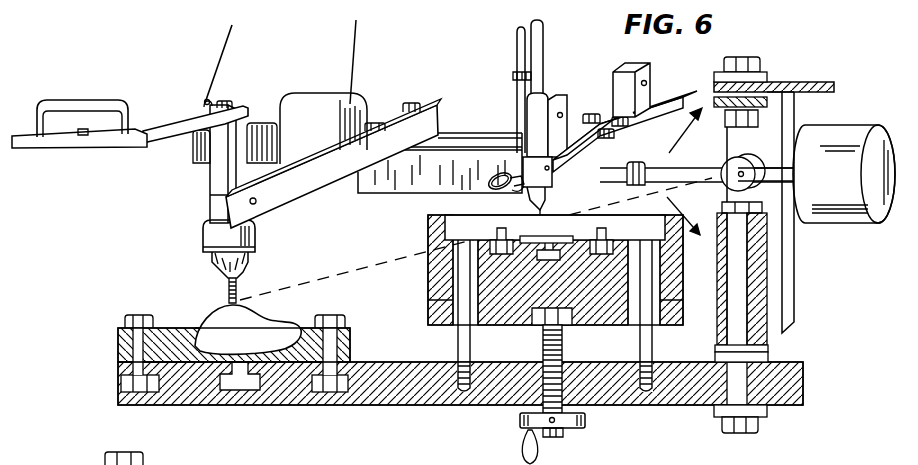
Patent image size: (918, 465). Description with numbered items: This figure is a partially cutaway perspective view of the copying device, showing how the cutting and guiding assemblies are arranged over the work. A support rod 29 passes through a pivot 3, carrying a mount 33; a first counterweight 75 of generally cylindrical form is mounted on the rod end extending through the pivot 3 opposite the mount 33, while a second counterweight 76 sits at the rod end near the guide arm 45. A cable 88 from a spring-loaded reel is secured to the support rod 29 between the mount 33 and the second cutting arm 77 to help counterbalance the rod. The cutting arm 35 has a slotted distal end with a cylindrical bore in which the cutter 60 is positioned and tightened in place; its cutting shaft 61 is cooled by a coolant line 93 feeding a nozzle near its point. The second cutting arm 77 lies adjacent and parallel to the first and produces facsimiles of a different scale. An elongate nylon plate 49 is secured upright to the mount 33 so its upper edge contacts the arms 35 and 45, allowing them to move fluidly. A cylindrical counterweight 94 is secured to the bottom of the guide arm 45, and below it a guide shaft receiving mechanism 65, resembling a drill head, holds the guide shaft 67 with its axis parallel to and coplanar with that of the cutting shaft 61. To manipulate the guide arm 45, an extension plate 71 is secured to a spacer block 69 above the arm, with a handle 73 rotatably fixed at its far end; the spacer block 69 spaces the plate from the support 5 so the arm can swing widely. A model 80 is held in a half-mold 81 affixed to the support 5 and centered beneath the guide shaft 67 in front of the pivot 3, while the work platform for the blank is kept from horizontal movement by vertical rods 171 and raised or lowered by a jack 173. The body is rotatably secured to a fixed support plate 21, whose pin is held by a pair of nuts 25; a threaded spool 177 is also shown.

The pivot 3 is at (797, 303).
The support 5 is at (803, 380).
The support plate 21 is at (812, 82).
The nuts 25 is at (152, 464).
The support rod 29 is at (685, 135).
The mount 33 is at (735, 163).
The cutting arm 35 is at (560, 105).
The guide arm 45 is at (210, 208).
The nylon plate 49 is at (395, 193).
The cutter 60 is at (548, 192).
The cutting shaft 61 is at (519, 191).
The guide shaft receiving mechanism 65 is at (208, 270).
The guide shaft 67 is at (240, 290).
The spacer block 69 is at (210, 185).
The extension plate 71 is at (150, 126).
The handle 73 is at (85, 104).
The first counterweight 75 is at (843, 125).
The second counterweight 76 is at (364, 102).
The second cutting arm 77 is at (660, 107).
The model 80 is at (274, 317).
The half-mold 81 is at (120, 347).
The cable 88 is at (427, 291).
The coolant line 93 is at (513, 48).
The counterweight 94 is at (203, 239).
The vertical rods 171 is at (456, 340).
The jack 173 is at (584, 420).
The threaded spool 177 is at (194, 150).